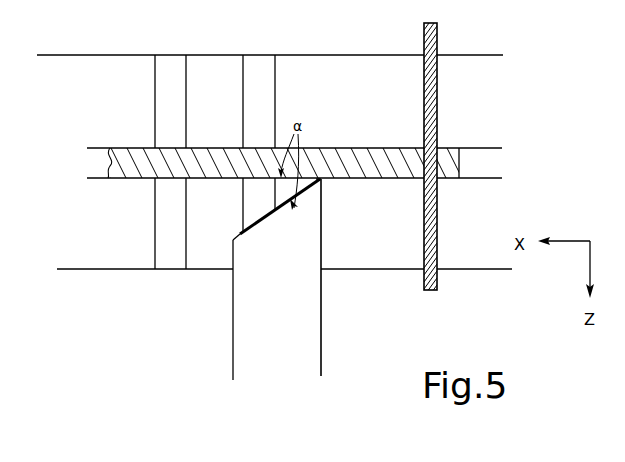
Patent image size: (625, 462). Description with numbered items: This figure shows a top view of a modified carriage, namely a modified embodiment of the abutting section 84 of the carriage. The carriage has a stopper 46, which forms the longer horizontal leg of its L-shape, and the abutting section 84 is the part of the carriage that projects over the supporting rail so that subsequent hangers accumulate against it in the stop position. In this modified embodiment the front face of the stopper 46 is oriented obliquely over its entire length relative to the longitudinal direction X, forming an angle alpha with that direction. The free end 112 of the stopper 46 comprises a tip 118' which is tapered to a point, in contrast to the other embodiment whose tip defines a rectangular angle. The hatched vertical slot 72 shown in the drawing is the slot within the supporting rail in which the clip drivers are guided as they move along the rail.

The slot 72 is at (492, 162).
The free end 112 is at (251, 229).
The tip 118' is at (358, 219).
The abutting section 84 is at (292, 313).
The stopper 46 is at (321, 333).